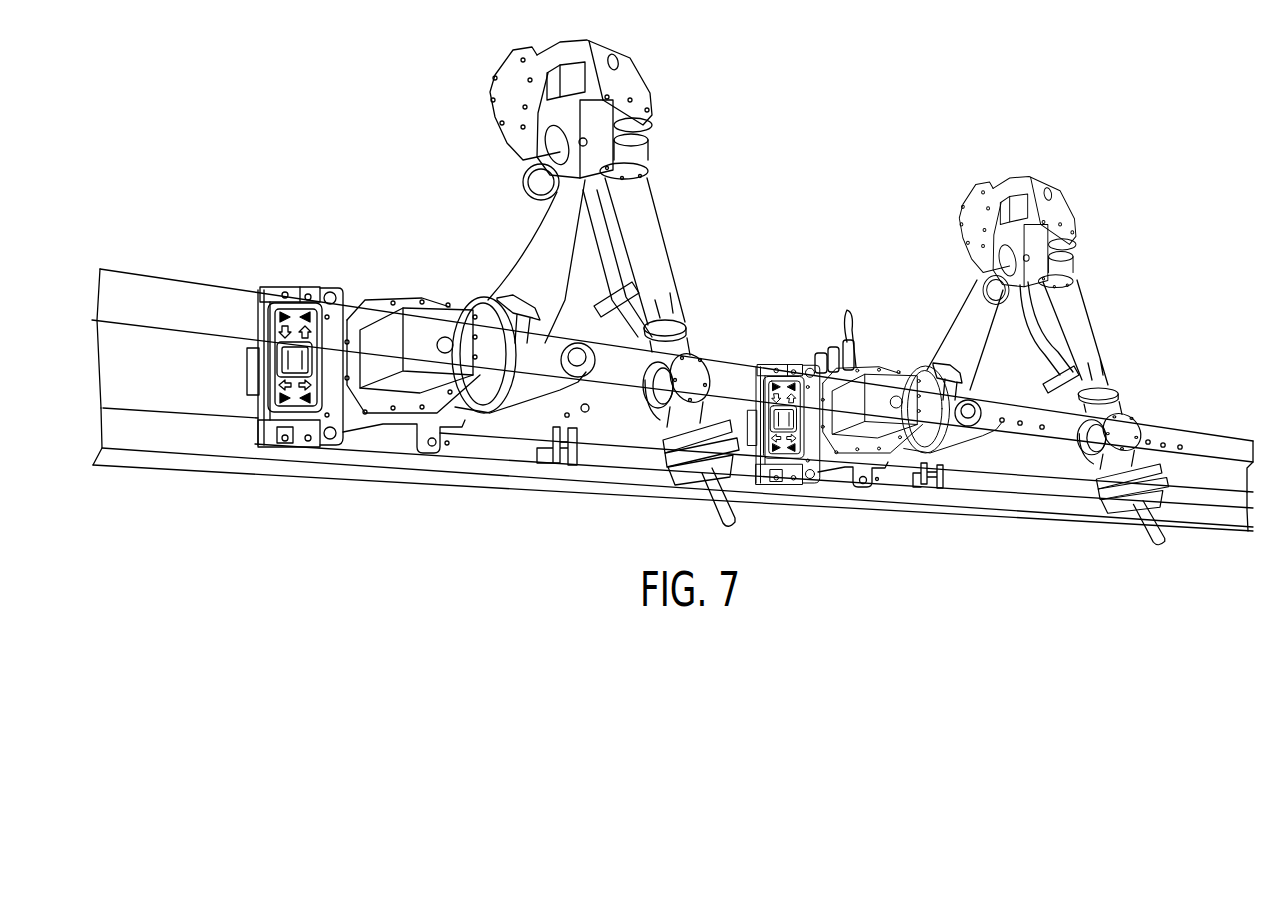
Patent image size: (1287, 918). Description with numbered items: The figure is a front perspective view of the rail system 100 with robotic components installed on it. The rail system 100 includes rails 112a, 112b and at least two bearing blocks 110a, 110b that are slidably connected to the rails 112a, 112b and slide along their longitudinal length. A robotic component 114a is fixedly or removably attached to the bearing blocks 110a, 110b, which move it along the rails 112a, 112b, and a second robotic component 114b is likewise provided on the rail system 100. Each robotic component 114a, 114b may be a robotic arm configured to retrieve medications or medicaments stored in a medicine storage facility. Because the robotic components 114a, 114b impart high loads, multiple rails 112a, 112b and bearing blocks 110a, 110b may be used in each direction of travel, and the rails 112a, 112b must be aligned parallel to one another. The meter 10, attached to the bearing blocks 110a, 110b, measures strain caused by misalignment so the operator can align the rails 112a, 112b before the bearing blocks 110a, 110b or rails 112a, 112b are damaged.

The meter 10 is at (262, 367).
The rail system 100 is at (858, 112).
The bearing block 110a is at (292, 292).
The bearing block 110b is at (289, 443).
The rail 112a is at (135, 287).
The rail 112b is at (123, 443).
The robotic component 114a is at (570, 52).
The robotic component 114b is at (1058, 208).